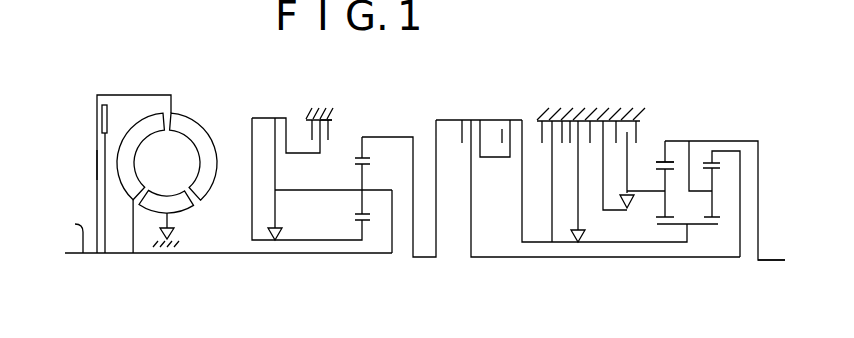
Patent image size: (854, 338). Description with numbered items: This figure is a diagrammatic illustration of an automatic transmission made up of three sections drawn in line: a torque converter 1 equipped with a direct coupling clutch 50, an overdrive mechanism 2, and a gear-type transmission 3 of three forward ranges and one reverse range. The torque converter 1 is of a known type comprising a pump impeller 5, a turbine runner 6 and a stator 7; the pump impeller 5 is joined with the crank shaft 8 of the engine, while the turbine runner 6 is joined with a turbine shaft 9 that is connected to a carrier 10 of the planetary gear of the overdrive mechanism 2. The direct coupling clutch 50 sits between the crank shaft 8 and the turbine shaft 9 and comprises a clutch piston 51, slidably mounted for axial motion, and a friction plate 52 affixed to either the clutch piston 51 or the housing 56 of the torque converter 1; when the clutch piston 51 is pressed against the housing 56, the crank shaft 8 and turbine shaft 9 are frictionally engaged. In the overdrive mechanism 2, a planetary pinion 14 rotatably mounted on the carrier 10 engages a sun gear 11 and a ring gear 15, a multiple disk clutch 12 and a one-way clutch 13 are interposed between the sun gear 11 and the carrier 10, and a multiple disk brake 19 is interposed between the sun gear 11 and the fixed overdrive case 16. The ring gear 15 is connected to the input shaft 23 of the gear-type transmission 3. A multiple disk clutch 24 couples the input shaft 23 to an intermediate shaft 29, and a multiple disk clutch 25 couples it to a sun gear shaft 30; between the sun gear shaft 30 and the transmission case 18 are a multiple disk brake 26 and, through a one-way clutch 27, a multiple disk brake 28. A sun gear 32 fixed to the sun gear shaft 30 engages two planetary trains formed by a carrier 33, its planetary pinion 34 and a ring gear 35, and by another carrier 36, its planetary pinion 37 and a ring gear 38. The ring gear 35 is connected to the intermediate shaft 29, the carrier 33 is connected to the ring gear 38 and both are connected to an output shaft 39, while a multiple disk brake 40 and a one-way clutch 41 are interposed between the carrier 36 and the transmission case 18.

The torque converter 1 is at (171, 78).
The overdrive mechanism 2 is at (342, 84).
The gear-type transmission 3 is at (622, 94).
The pump impeller 5 is at (198, 137).
The turbine runner 6 is at (148, 128).
The stator 7 is at (180, 178).
The crank shaft 8 is at (73, 229).
The turbine shaft 9 is at (318, 257).
The carrier 10 is at (383, 188).
The sun gear 11 is at (357, 220).
The multiple disk clutch 12 is at (277, 118).
The one-way clutch 13 is at (277, 225).
The planetary pinion 14 is at (358, 167).
The ring gear 15 is at (362, 156).
The overdrive case 16 is at (320, 112).
The transmission case 18 is at (605, 113).
The multiple disk brake 19 is at (332, 126).
The input shaft 23 is at (422, 257).
The multiple disk clutch 24 is at (479, 119).
The multiple disk clutch 25 is at (510, 119).
The multiple disk brake 26 is at (553, 120).
The one-way clutch 27 is at (567, 247).
The multiple disk brake 28 is at (583, 120).
The intermediate shaft 29 is at (537, 258).
The sun gear shaft 30 is at (537, 240).
The sun gear 32 is at (697, 227).
The carrier 33 is at (692, 168).
The planetary pinion 34 is at (715, 172).
The ring gear 35 is at (720, 162).
The carrier 36 is at (643, 189).
The planetary pinion 37 is at (656, 204).
The ring gear 38 is at (668, 158).
The output shaft 39 is at (770, 262).
The multiple disk brake 40 is at (628, 118).
The one-way clutch 41 is at (617, 210).
The direct coupling clutch 50 is at (97, 82).
The clutch piston 51 is at (105, 187).
The friction plate 52 is at (102, 112).
The housing 56 is at (97, 148).